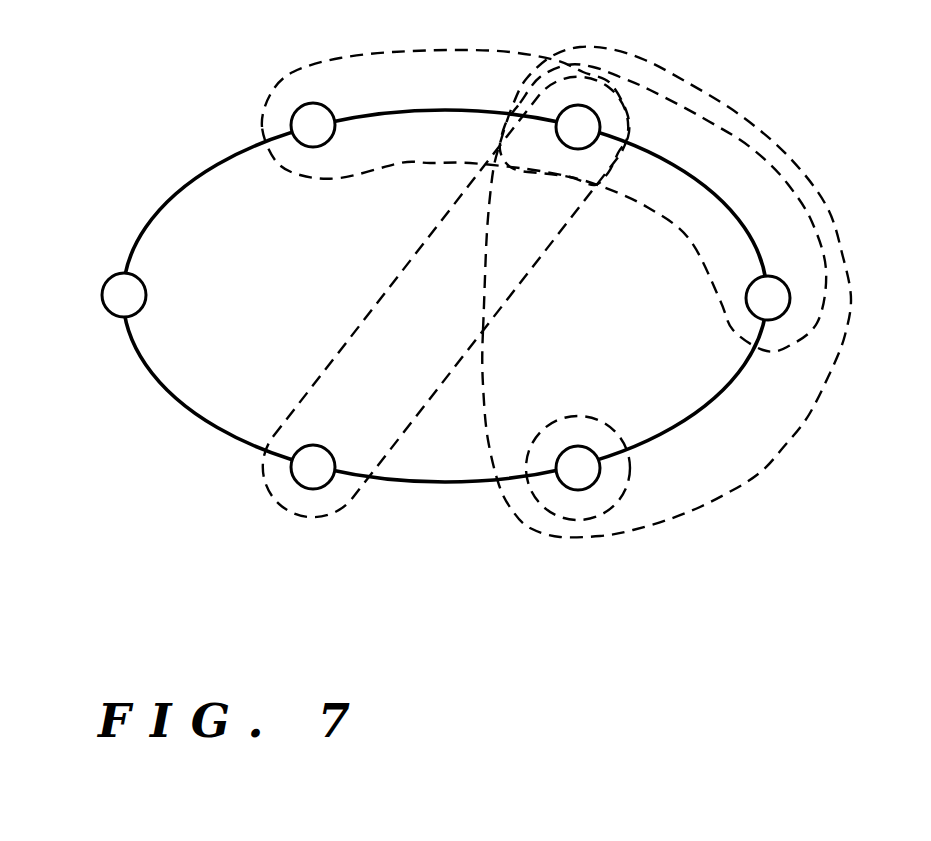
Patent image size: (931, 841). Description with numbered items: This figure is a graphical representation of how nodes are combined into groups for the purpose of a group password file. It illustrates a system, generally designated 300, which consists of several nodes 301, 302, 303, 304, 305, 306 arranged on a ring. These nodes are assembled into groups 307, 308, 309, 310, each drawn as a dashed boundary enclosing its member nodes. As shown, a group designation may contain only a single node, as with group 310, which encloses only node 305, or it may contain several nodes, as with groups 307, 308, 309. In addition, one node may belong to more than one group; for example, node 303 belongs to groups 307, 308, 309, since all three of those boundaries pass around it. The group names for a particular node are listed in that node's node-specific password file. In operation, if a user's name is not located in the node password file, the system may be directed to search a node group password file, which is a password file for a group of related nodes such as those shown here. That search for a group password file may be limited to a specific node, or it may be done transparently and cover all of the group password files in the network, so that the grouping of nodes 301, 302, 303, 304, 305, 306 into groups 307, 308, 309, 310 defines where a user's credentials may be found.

The system 300 is at (113, 99).
The node 301 is at (101, 300).
The node 302 is at (302, 104).
The node 303 is at (583, 105).
The node 304 is at (747, 303).
The node 305 is at (585, 447).
The node 306 is at (320, 446).
The group 307 is at (757, 470).
The group 308 is at (456, 50).
The group 309 is at (368, 317).
The group 310 is at (547, 507).